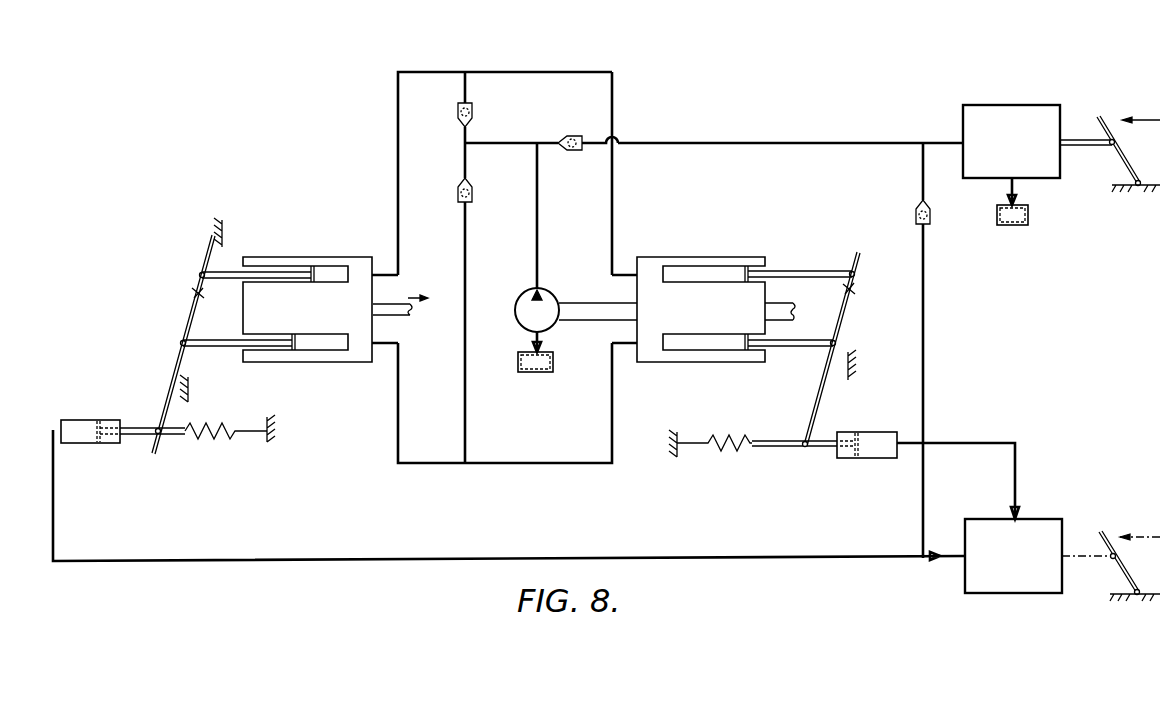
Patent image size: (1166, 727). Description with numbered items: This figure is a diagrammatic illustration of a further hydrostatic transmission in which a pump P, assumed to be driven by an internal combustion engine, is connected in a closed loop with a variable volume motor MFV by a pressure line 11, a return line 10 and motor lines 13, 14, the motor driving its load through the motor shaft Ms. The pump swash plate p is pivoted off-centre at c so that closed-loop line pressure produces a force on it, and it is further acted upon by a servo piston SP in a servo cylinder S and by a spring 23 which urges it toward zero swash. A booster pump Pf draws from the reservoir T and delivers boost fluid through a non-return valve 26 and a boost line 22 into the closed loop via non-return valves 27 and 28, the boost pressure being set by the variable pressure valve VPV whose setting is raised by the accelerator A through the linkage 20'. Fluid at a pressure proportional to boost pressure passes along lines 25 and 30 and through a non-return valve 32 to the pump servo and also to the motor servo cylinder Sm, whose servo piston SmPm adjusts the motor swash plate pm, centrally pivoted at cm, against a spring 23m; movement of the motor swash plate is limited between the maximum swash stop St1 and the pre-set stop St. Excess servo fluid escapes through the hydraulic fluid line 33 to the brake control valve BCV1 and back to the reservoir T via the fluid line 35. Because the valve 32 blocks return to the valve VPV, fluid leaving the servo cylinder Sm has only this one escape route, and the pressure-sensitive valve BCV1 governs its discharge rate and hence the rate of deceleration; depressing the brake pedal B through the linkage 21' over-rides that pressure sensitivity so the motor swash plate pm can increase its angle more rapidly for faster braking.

The return line 10 is at (545, 463).
The pressure line 11 is at (612, 184).
The hydraulic fluid motor line 13 is at (398, 205).
The hydraulic fluid motor line 14 is at (398, 425).
The boost line 22 is at (516, 143).
The line 25 is at (777, 143).
The non-return valve 26 is at (574, 136).
The non-return valve 27 is at (472, 112).
The non-return valve 28 is at (472, 190).
The line 30 is at (923, 173).
The non-return valve 32 is at (916, 216).
The hydraulic fluid line 33 is at (1015, 470).
The fluid line 35 is at (936, 560).
The spring 23 is at (718, 448).
The spring 23m is at (205, 440).
The linkage 20' is at (1110, 138).
The linkage 21' is at (1111, 574).
The booster pump Pf is at (524, 296).
The reservoir T is at (553, 362).
The pump P is at (692, 257).
The swash plate p is at (840, 326).
The pivot c is at (853, 291).
The servo cylinder S is at (858, 432).
The servo piston SP is at (850, 458).
The variable volume motor MFV is at (318, 257).
The motor shaft Ms is at (410, 312).
The pivot cm is at (195, 293).
The swash plate pm is at (170, 365).
The maximum swash stop St1 is at (226, 232).
The pre-set stop St is at (192, 388).
The servo cylinder Sm is at (78, 443).
The servo piston SmPm is at (97, 420).
The variable pressure valve VPV is at (963, 118).
The accelerator A is at (1140, 152).
The brake control valve BCV1 is at (1058, 519).
The brake pedal B is at (1128, 570).